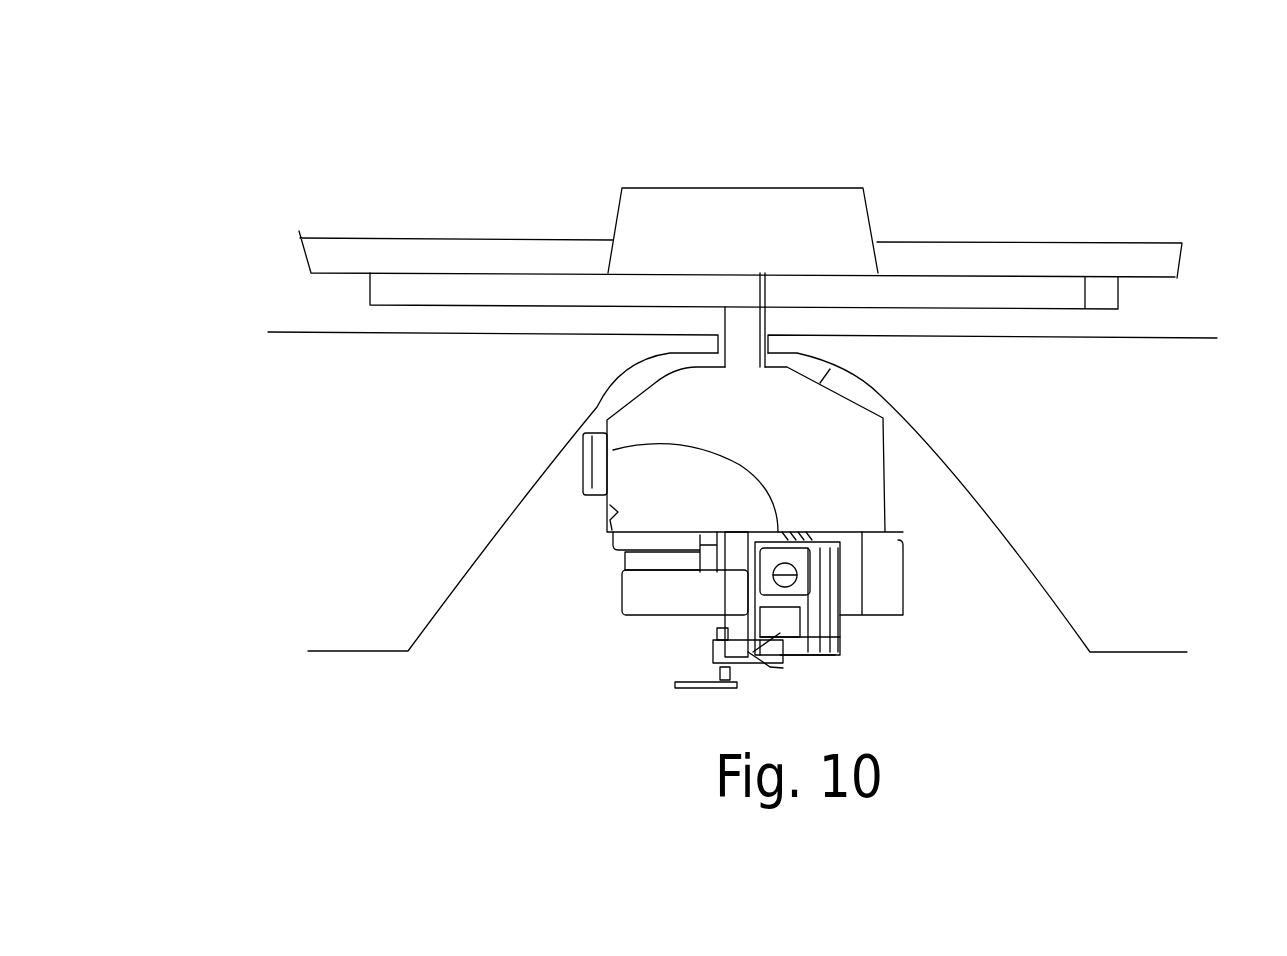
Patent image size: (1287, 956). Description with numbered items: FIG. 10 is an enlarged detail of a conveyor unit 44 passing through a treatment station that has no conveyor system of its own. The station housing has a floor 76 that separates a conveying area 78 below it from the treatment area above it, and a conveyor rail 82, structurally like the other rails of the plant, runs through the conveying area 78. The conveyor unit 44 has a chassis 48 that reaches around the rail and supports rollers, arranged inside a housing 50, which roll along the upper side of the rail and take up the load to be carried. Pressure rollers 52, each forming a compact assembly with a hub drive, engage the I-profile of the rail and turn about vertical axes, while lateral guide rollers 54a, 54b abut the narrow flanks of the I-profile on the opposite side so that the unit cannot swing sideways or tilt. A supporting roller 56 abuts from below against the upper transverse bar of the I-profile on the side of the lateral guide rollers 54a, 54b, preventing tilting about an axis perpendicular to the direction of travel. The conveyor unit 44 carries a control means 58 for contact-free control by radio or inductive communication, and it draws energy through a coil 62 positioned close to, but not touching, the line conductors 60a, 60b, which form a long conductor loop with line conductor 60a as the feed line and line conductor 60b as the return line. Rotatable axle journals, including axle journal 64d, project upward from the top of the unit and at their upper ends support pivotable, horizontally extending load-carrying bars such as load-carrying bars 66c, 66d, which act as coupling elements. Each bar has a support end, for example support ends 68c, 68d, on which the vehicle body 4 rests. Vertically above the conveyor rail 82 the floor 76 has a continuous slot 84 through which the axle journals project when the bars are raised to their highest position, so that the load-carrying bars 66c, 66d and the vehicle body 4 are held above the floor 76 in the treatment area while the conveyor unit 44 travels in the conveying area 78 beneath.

The vehicle body 4 is at (1157, 268).
The floor 76 is at (333, 330).
The support end 68d is at (378, 296).
The load-carrying bar 66d is at (550, 295).
The axle journal 64d is at (722, 325).
The slot 84 is at (767, 322).
The load-carrying bar 66c is at (966, 288).
The support end 68c is at (1105, 288).
The conveyor unit 44 is at (892, 458).
The housing 50 is at (838, 433).
The coil 62 is at (610, 457).
The conveying area 78 is at (608, 512).
The chassis 48 is at (588, 550).
The pressure roller 52 is at (640, 597).
The lateral guide roller 54a is at (780, 545).
The control means 58 is at (885, 562).
The line conductor 60a is at (840, 598).
The line conductor 60b is at (860, 603).
The lateral guide roller 54b is at (803, 650).
The supporting roller 56 is at (760, 540).
The conveyor rail 82 is at (755, 640).